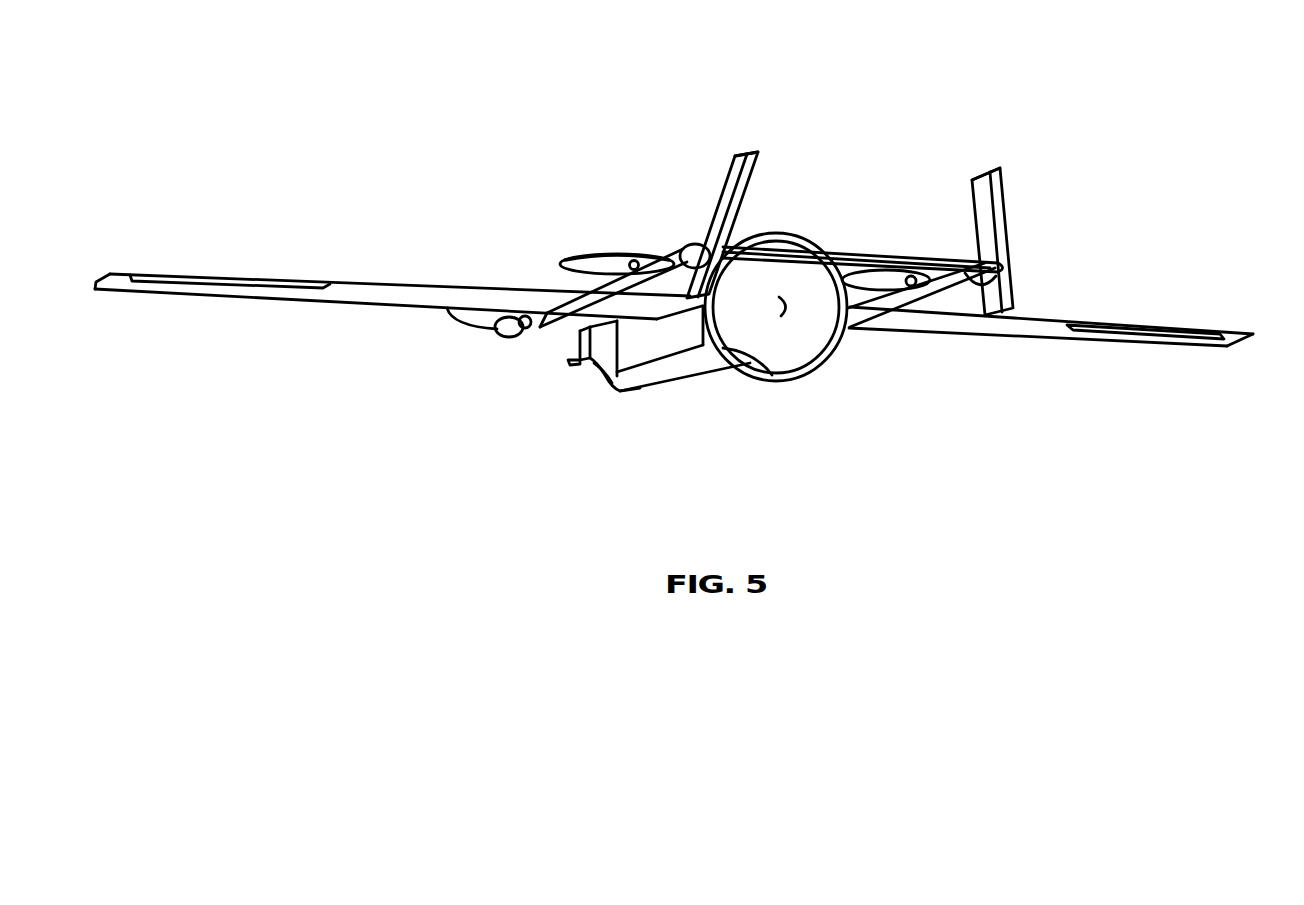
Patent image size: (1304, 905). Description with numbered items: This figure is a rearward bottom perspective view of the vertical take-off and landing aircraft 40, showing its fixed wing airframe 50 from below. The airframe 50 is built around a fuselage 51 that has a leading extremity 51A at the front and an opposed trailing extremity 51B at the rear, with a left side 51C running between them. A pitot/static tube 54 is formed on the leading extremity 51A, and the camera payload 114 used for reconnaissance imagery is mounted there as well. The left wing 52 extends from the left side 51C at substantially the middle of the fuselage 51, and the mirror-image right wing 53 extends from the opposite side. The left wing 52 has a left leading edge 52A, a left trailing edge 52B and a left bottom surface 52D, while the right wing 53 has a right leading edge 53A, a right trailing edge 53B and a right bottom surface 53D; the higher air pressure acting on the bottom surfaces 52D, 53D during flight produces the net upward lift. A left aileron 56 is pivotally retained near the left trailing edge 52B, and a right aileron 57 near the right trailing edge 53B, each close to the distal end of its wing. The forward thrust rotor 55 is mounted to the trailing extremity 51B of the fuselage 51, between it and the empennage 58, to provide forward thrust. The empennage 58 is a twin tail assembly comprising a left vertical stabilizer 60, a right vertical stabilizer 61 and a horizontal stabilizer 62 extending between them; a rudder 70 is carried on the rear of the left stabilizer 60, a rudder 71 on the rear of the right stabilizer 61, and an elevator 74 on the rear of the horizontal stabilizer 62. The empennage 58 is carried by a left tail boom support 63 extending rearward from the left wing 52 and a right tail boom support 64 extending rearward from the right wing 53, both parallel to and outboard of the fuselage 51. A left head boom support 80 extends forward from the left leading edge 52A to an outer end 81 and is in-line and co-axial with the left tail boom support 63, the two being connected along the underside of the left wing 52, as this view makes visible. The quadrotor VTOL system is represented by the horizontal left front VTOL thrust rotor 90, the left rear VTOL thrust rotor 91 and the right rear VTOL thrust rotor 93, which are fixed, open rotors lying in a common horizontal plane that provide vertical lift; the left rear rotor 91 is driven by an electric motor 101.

The vertical take-off and landing aircraft 40 is at (1042, 83).
The airframe 50 is at (362, 283).
The fuselage 51 is at (700, 373).
The leading extremity 51A is at (580, 362).
The trailing extremity 51B is at (774, 378).
The left side 51C is at (647, 350).
The left wing 52 is at (340, 298).
The left leading edge 52A is at (95, 284).
The left trailing edge 52B is at (393, 283).
The left bottom surface 52D is at (375, 296).
The right wing 53 is at (1045, 325).
The right leading edge 53A is at (1228, 347).
The right trailing edge 53B is at (1029, 312).
The right bottom surface 53D is at (1010, 326).
The pitot/static tube 54 is at (568, 363).
The forward thrust rotor 55 is at (820, 363).
The left aileron 56 is at (232, 281).
The right aileron 57 is at (1163, 326).
The empennage 58 is at (745, 152).
The left vertical stabilizer 60 is at (727, 180).
The right vertical stabilizer 61 is at (978, 180).
The horizontal stabilizer 62 is at (805, 268).
The left tail boom support 63 is at (610, 280).
The right tail boom support 64 is at (890, 309).
The rudder 70 is at (749, 169).
The rudder 71 is at (1006, 184).
The elevator 74 is at (862, 256).
The left head boom support 80 is at (531, 337).
The outer end 81 is at (530, 331).
The left front VTOL thrust rotor 90 is at (477, 313).
The left rear VTOL thrust rotor 91 is at (594, 272).
The right rear VTOL thrust rotor 93 is at (885, 276).
The electric motor 101 is at (640, 260).
The camera payload 114 is at (617, 388).